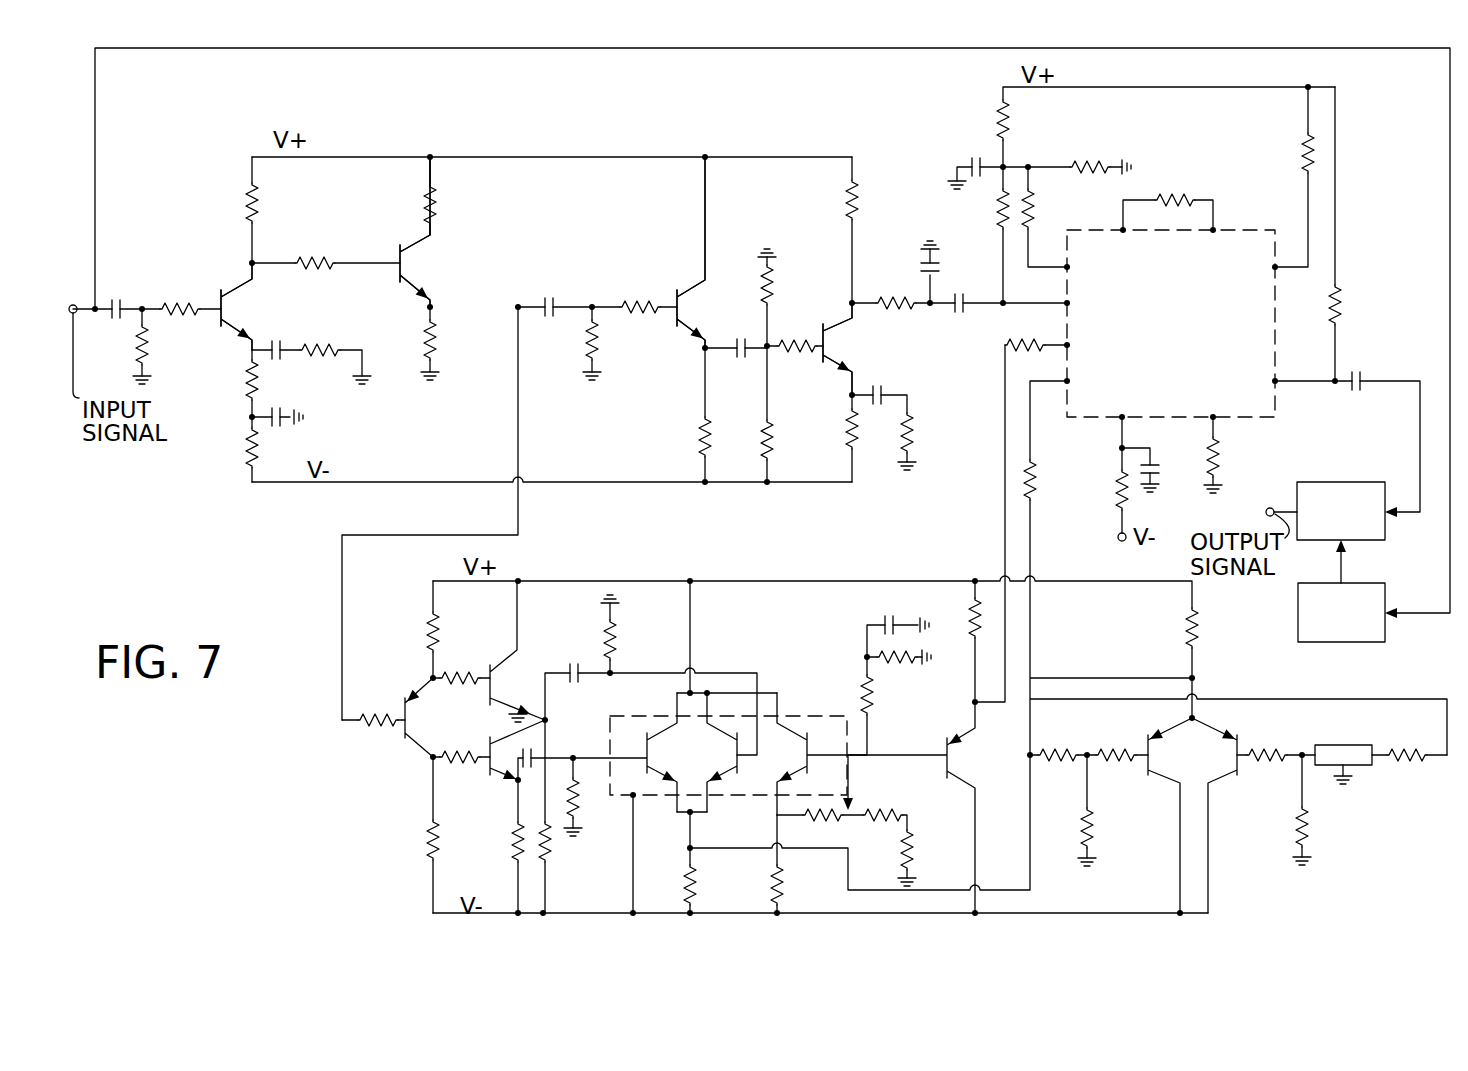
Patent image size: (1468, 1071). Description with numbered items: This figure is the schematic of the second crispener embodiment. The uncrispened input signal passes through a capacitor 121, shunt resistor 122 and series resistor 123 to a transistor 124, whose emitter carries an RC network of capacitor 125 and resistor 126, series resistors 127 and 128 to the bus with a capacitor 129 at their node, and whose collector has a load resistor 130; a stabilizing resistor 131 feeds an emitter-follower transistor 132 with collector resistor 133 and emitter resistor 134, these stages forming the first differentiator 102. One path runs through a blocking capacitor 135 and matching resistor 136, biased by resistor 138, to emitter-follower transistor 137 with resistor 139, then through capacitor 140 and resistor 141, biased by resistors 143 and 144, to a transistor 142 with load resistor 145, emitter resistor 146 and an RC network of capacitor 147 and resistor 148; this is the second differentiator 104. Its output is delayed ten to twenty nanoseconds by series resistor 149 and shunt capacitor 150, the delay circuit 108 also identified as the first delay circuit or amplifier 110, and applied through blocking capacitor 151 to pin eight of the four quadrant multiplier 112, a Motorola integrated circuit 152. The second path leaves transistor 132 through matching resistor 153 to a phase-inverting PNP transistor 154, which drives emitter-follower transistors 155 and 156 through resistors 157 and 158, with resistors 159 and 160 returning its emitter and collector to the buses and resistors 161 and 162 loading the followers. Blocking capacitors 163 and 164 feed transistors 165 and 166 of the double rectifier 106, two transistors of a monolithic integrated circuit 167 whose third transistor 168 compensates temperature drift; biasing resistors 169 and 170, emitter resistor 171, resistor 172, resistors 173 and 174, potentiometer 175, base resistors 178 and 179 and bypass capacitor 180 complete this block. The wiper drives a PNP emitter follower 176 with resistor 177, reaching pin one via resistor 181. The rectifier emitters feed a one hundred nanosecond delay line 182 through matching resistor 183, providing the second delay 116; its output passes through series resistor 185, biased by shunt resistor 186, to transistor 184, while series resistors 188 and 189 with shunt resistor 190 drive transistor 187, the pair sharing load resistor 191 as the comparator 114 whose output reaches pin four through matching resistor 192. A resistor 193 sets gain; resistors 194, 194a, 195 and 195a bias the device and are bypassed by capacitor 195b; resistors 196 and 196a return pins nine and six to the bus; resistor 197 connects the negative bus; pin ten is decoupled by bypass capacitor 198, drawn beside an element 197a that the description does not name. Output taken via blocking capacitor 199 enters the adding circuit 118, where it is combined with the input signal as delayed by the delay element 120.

The first differentiator 102 is at (308, 222).
The second differentiator 104 is at (870, 216).
The full wave rectifier 106 is at (747, 643).
The delay circuit 108 is at (926, 340).
The first delay circuit 110 is at (1285, 432).
The four quadrant multiplier 112 is at (1180, 315).
The comparator circuit 114 is at (1227, 837).
The second delay 116 is at (1368, 784).
The adding circuit 118 is at (1373, 537).
The delay element 120 is at (1372, 637).
The capacitor 121 is at (112, 296).
The shunt resistor 122 is at (143, 336).
The series resistor 123 is at (166, 306).
The transistor 124 is at (234, 341).
The capacitor 125 is at (272, 346).
The resistor 126 is at (320, 346).
The resistor 127 is at (254, 388).
The resistor 128 is at (247, 452).
The capacitor 129 is at (278, 435).
The load resistor 130 is at (255, 199).
The stabilizing resistor 131 is at (303, 264).
The transistor 132 is at (417, 302).
The collector resistor 133 is at (435, 197).
The emitter resistor 134 is at (440, 340).
The blocking capacitor 135 is at (541, 302).
The impedance matching resistor 136 is at (620, 300).
The emitter follower transistor 137 is at (700, 332).
The resistor 138 is at (583, 350).
The resistor 139 is at (702, 437).
The series capacitor 140 is at (748, 330).
The series resistor 141 is at (812, 340).
The transistor 142 is at (840, 373).
The shunt resistor 143 is at (772, 272).
The resistor 144 is at (776, 424).
The load resistor 145 is at (848, 186).
The emitter resistor 146 is at (846, 442).
The capacitor 147 is at (896, 368).
The resistor 148 is at (911, 426).
The series resistor 149 is at (909, 320).
The shunt capacitor 150 is at (916, 272).
The blocking capacitor 151 is at (974, 319).
The integrated circuit 152 is at (1268, 404).
The matching resistor 153 is at (388, 722).
The PNP transistor 154 is at (401, 750).
The transistor 155 is at (496, 718).
The transistor 156 is at (505, 795).
The emitter to base resistor 157 is at (480, 652).
The collector to base resistor 158 is at (464, 776).
The resistor 159 is at (422, 626).
The collector resistor 160 is at (418, 847).
The resistor 161 is at (550, 866).
The resistor 162 is at (516, 853).
The blocking capacitor 163 is at (578, 692).
The blocking capacitor 164 is at (537, 751).
The transistor 165 is at (766, 780).
The transistor 166 is at (654, 780).
The monolithic integrated circuit 167 is at (760, 745).
The third transistor 168 is at (799, 780).
The biasing resistor 169 is at (613, 651).
The biasing resistor 170 is at (580, 828).
The resistor 171 is at (692, 876).
The resistor 172 is at (787, 876).
The resistor 173 is at (787, 828).
The resistor 174 is at (910, 837).
The potentiometer 175 is at (891, 828).
The PNP transistor 176 is at (958, 789).
The resistor 177 is at (970, 615).
The series resistor 178 is at (873, 711).
The series resistor 179 is at (874, 662).
The bypass capacitor 180 is at (892, 618).
The resistor 181 is at (1047, 344).
The delay line 182 is at (1366, 746).
The matching resistor 183 is at (1427, 750).
The transistor 184 is at (1212, 786).
The series resistor 185 is at (1289, 754).
The shunt resistor 186 is at (1313, 826).
The PNP transistor 187 is at (1168, 784).
The series resistor 188 is at (1094, 754).
The series resistor 189 is at (1041, 754).
The shunt resistor 190 is at (1097, 831).
The load resistor 191 is at (1195, 640).
The input matching resistor 192 is at (1035, 479).
The resistor 193 is at (1198, 190).
The resistor 194 is at (998, 220).
The resistor 194a is at (1028, 198).
The resistor 195 is at (1008, 117).
The resistor 195a is at (1064, 167).
The capacitor 195b is at (974, 160).
The resistor 196 is at (1304, 156).
The resistor 196a is at (1340, 302).
The resistor 197 is at (1114, 507).
The capacitor 197a is at (1150, 454).
The bypass capacitor 198 is at (1219, 442).
The blocking capacitor 199 is at (1354, 376).